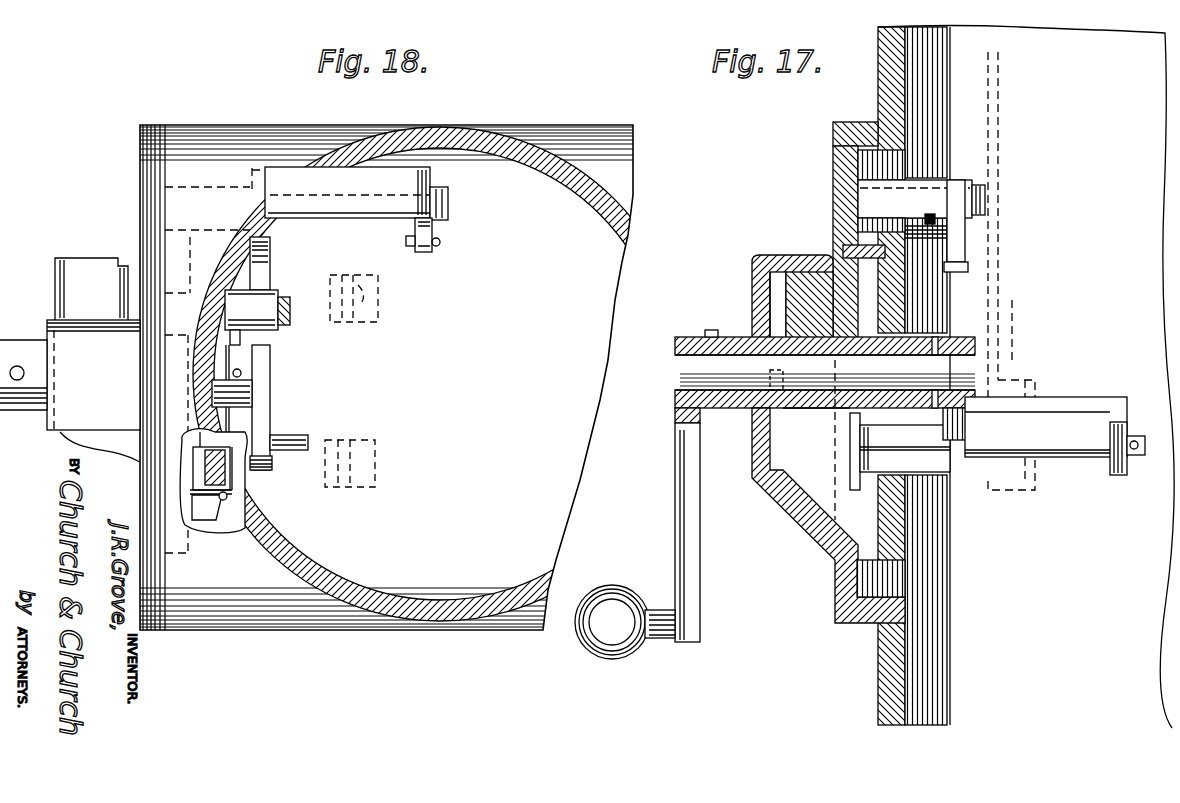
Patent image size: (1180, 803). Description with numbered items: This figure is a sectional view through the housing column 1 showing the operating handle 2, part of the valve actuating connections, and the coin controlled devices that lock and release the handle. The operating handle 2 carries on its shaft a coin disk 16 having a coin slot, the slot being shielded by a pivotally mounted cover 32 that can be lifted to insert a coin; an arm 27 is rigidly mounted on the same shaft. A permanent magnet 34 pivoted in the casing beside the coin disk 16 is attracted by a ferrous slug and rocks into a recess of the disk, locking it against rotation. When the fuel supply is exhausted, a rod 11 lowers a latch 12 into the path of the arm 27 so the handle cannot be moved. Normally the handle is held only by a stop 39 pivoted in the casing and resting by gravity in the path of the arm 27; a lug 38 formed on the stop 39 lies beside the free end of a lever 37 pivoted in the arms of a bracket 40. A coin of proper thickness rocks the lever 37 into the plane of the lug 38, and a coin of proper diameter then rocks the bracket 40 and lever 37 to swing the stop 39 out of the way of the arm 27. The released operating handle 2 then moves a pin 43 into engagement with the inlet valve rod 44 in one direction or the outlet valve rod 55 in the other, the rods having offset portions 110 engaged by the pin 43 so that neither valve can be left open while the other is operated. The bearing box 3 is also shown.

In FIG. 18, the housing column 1 is at (549, 128).
In FIG. 17, the housing column 1 is at (882, 668).
In FIG. 18, the operating handle 2 is at (8, 346).
In FIG. 17, the operating handle 2 is at (676, 506).
In FIG. 18, the bearing box 3 is at (78, 268).
In FIG. 17, the bearing box 3 is at (790, 256).
In FIG. 18, the rod 11 is at (441, 242).
In FIG. 18, the latch 12 is at (435, 178).
In FIG. 17, the latch 12 is at (1093, 398).
In FIG. 17, the coin disk 16 is at (752, 450).
In FIG. 18, the arm 27 is at (270, 282).
In FIG. 17, the arm 27 is at (963, 338).
In FIG. 18, the cover 32 is at (58, 432).
In FIG. 17, the permanent magnet 34 is at (770, 300).
In FIG. 18, the lever 37 is at (248, 455).
In FIG. 18, the lug 38 is at (238, 340).
In FIG. 17, the lug 38 is at (930, 214).
In FIG. 18, the stop 39 is at (262, 308).
In FIG. 17, the stop 39 is at (955, 243).
In FIG. 18, the bracket 40 is at (232, 498).
In FIG. 18, the pin 43 is at (308, 432).
In FIG. 18, the inlet valve rod 44 is at (380, 302).
In FIG. 17, the inlet valve rod 44 is at (992, 146).
In FIG. 18, the outlet valve rod 55 is at (376, 468).
In FIG. 17, the offset portions 110 is at (1011, 490).